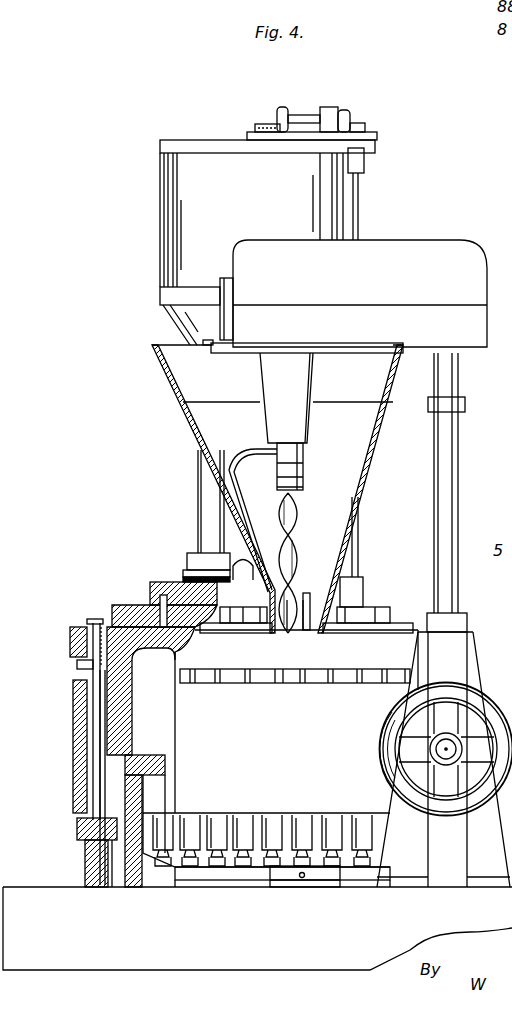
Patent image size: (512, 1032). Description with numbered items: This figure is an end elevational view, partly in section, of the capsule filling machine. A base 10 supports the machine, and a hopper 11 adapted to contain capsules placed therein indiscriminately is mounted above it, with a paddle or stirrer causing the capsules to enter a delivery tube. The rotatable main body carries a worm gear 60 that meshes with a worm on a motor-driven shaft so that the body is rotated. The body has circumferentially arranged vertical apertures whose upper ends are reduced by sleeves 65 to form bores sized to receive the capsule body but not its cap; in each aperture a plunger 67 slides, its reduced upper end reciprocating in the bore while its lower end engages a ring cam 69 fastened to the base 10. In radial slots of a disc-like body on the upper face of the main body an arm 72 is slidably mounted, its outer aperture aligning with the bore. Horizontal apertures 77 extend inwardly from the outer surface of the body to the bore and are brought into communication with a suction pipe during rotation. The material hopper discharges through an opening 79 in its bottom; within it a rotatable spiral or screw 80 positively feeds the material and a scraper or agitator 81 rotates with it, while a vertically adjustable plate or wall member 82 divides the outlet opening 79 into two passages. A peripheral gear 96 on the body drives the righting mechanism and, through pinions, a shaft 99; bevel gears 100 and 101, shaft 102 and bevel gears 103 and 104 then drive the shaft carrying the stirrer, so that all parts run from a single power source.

The base 10 is at (47, 962).
The hopper 11 is at (163, 225).
The worm gear 60 is at (72, 752).
The sleeves 65 is at (70, 640).
The plunger 67 is at (90, 722).
The ring cam 69 is at (77, 830).
The arm 72 is at (125, 600).
The apertures 77 is at (75, 662).
The opening 79 is at (293, 630).
The spiral or screw 80 is at (292, 542).
The scraper or agitator 81 is at (245, 500).
The plate or wall member 82 is at (340, 565).
The peripheral gear 96 is at (73, 690).
The shaft 99 is at (360, 180).
The bevel gear 100 is at (365, 128).
The bevel gear 101 is at (350, 114).
The shaft 102 is at (300, 115).
The bevel gear 103 is at (282, 110).
The bevel gear 104 is at (258, 126).